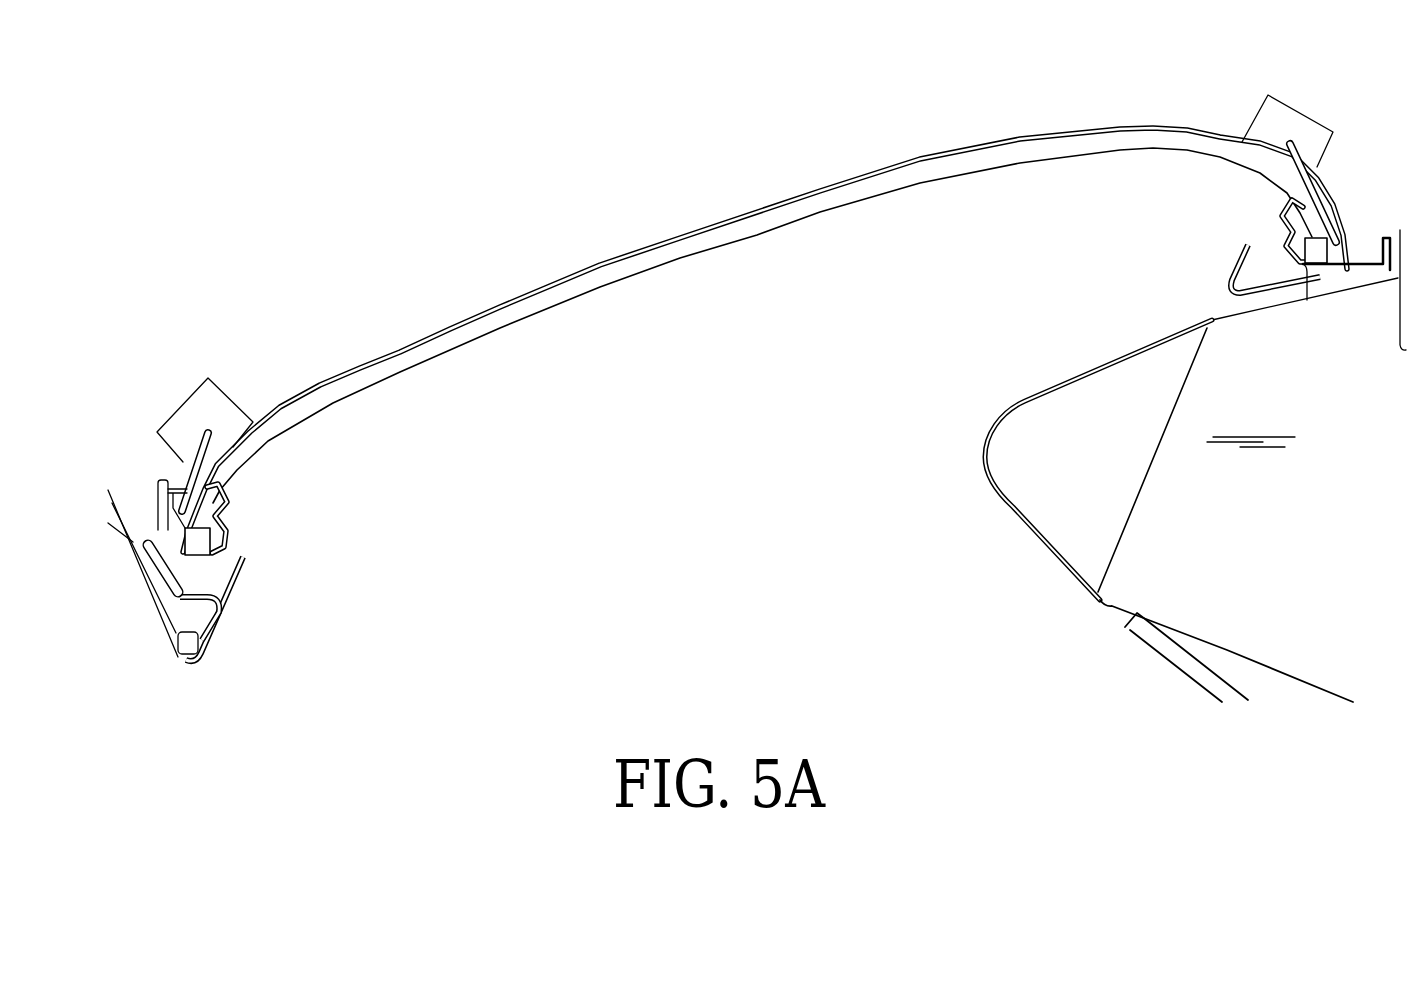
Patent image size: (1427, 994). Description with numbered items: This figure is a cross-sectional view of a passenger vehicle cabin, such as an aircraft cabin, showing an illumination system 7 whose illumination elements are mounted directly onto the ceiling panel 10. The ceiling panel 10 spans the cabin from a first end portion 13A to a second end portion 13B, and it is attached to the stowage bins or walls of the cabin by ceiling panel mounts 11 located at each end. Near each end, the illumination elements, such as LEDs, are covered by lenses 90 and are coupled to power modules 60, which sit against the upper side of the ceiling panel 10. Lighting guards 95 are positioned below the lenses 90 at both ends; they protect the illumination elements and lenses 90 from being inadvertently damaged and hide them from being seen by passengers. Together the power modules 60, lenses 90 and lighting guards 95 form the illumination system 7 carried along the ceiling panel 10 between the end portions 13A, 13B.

The illumination system 7 is at (749, 436).
The ceiling panel 10 is at (758, 246).
The ceiling panel mounts 11 is at (160, 481).
The first end portion 13A is at (197, 502).
The second end portion 13B is at (1313, 208).
The power modules 60 is at (215, 393).
The lenses 90 is at (245, 521).
The lighting guards 95 is at (232, 603).